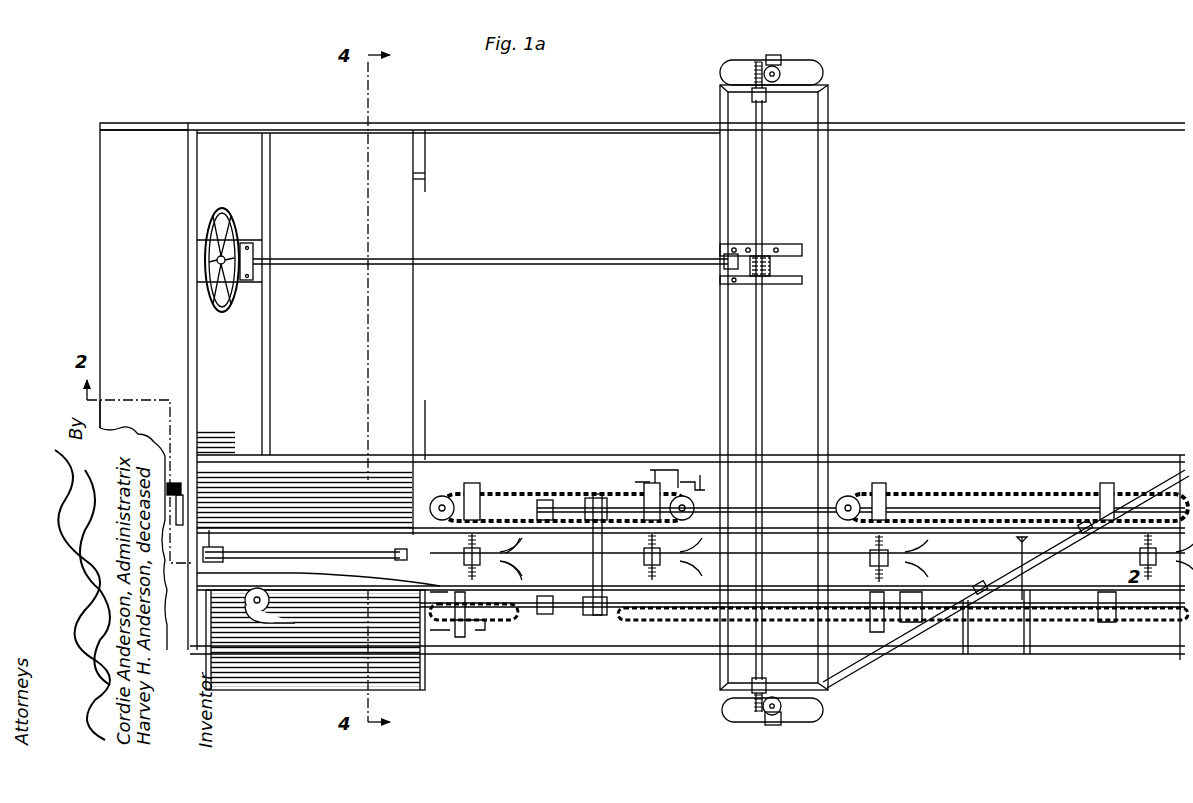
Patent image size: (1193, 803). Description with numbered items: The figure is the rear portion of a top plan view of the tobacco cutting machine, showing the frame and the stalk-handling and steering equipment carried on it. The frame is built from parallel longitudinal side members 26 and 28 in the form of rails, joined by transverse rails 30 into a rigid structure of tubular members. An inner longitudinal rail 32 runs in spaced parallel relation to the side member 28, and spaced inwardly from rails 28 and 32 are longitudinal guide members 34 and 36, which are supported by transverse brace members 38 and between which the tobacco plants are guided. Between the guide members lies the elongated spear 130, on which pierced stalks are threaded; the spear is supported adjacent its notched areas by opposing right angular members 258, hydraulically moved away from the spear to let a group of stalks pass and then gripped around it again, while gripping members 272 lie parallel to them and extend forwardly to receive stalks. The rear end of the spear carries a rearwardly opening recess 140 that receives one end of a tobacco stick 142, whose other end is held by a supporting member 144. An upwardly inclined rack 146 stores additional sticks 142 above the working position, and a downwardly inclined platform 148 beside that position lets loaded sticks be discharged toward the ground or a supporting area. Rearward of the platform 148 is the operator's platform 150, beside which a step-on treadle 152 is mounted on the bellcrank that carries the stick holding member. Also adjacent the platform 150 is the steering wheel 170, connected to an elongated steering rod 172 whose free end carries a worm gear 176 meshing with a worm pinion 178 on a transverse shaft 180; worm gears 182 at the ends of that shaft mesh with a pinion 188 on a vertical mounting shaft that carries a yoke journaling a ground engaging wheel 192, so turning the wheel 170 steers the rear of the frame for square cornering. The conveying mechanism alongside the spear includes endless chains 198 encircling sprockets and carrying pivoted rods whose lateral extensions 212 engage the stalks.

The longitudinal side member 26 is at (610, 130).
The longitudinal side member 28 is at (592, 652).
The transverse rail 30 is at (425, 158).
The inner longitudinal rail 32 is at (905, 456).
The longitudinal guide member 34 is at (1003, 530).
The longitudinal guide member 36 is at (1024, 652).
The transverse brace member 38 is at (963, 632).
The elongated spear 130 is at (1000, 560).
The rearwardly opening recess 140 is at (398, 548).
The tobacco stick 142 is at (305, 552).
The tobacco stick supporting member 144 is at (218, 546).
The upwardly inclined rack 146 is at (296, 686).
The downwardly inclined platform 148 is at (302, 148).
The operator's platform 150 is at (98, 269).
The step-on treadle 152 is at (180, 484).
The steering wheel 170 is at (218, 212).
The steering rod 172 is at (535, 259).
The worm gear 176 is at (778, 256).
The worm pinion 178 is at (766, 278).
The transverse shaft 180 is at (766, 382).
The worm gear 182 is at (756, 72).
The pinion 188 is at (782, 712).
The ground engaging wheel 192 is at (781, 66).
The endless chain 198 is at (600, 495).
The lateral extension 212 is at (540, 490).
The right angular member 258 is at (868, 553).
The gripping member 272 is at (522, 582).